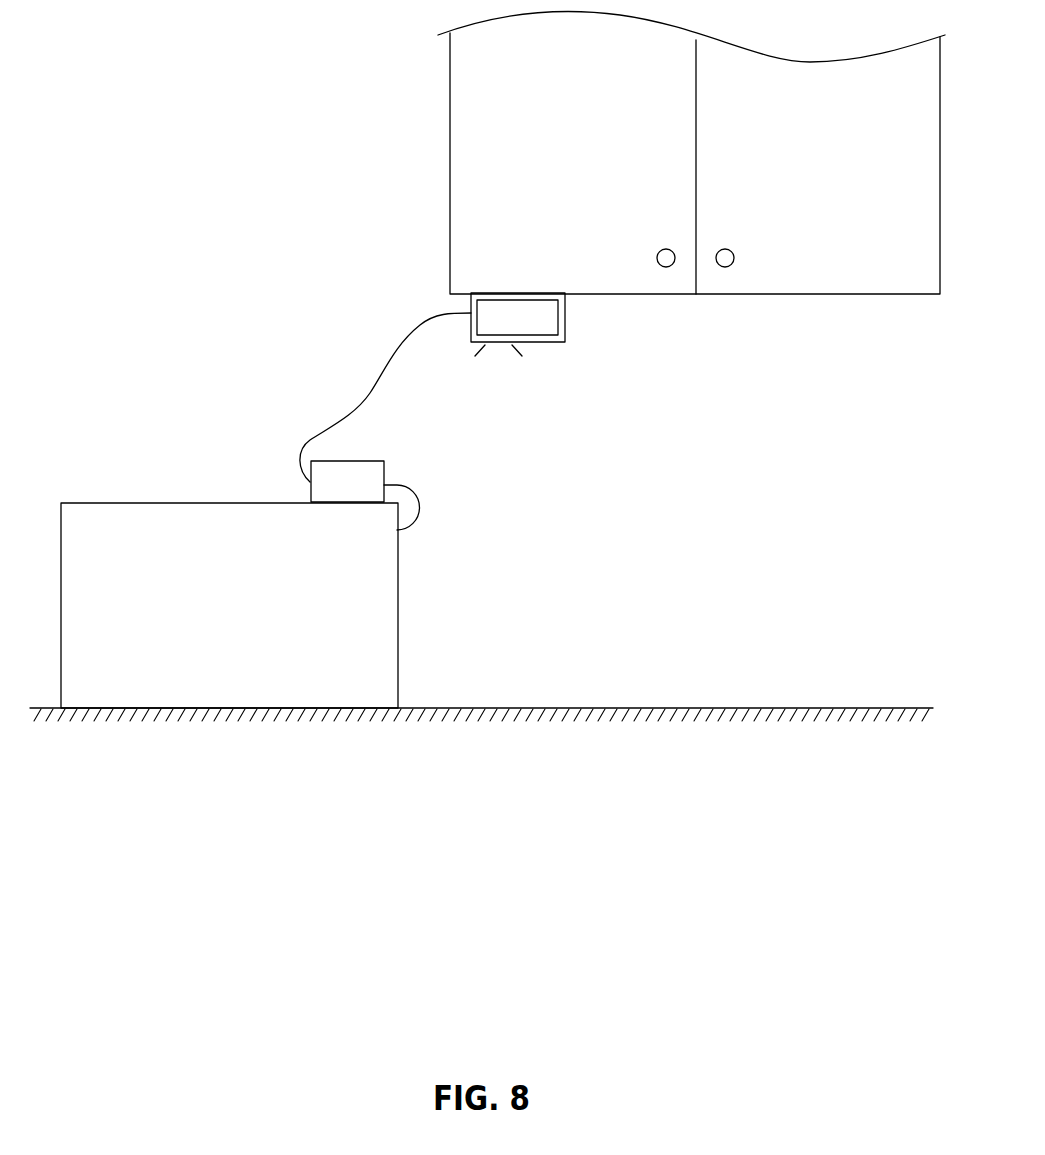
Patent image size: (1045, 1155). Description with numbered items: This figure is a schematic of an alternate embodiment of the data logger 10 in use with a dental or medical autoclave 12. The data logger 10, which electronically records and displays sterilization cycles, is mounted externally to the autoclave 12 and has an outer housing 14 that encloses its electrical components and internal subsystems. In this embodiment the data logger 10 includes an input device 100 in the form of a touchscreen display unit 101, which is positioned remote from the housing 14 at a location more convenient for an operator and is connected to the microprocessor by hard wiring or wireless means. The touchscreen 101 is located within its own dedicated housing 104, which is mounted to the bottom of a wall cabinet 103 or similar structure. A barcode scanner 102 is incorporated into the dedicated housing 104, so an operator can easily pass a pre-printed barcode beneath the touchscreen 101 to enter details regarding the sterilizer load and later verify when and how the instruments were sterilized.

The data logger 10 is at (262, 462).
The autoclave 12 is at (223, 612).
The housing 14 is at (347, 492).
The input device 100 is at (595, 399).
The touchscreen display unit 101 is at (538, 320).
The barcode scanner 102 is at (495, 350).
The wall cabinet 103 is at (870, 272).
The dedicated housing 104 is at (567, 309).